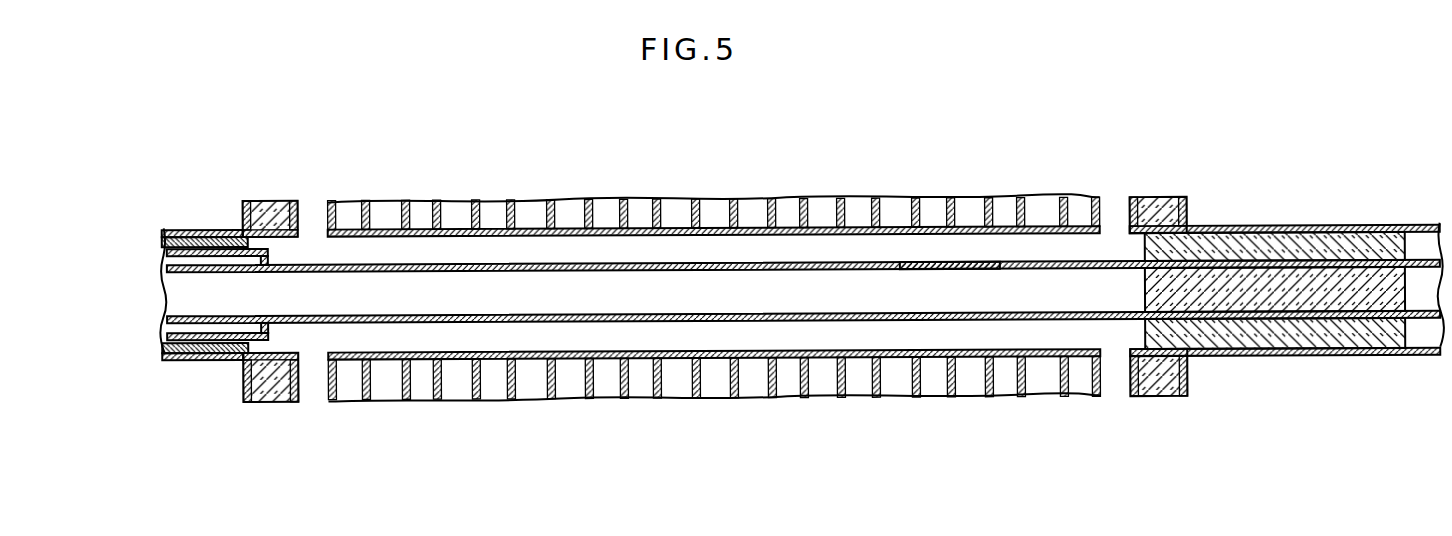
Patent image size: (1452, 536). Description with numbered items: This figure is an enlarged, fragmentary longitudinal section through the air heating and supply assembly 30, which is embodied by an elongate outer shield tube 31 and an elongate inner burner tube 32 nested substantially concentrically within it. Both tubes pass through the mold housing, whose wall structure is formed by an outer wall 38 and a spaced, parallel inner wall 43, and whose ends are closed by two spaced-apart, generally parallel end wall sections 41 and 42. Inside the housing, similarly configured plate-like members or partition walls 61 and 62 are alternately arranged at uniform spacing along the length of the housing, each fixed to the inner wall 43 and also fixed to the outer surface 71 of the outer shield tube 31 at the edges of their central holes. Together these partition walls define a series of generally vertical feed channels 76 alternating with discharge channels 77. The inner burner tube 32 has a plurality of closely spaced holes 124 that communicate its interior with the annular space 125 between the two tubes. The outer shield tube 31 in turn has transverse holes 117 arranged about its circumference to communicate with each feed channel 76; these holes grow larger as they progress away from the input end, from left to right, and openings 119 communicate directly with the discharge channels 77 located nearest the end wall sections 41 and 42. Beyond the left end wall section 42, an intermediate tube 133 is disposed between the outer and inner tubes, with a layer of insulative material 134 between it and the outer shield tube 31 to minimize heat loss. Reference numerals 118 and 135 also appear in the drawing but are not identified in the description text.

The air heating and supply assembly 30 is at (677, 372).
The outer shield tube 31 is at (209, 360).
The inner burner tube 32 is at (217, 247).
The outer wall 38 is at (1187, 390).
The end wall section 41 is at (1200, 205).
The end wall section 42 is at (240, 392).
The inner wall 43 is at (1137, 387).
The plate-like member 61 is at (417, 200).
The plate-like member 62 is at (453, 201).
The outer surface 71 is at (676, 228).
The feed channel 76 is at (350, 201).
The discharge channel 77 is at (388, 201).
The hole 117 is at (788, 222).
The outer wall 118 is at (650, 240).
The opening 119 is at (314, 202).
The hole 124 is at (818, 263).
The annular space 125 is at (952, 247).
The intermediate tube 133 is at (200, 234).
The insulative material 134 is at (188, 360).
The end ring 135 is at (275, 407).